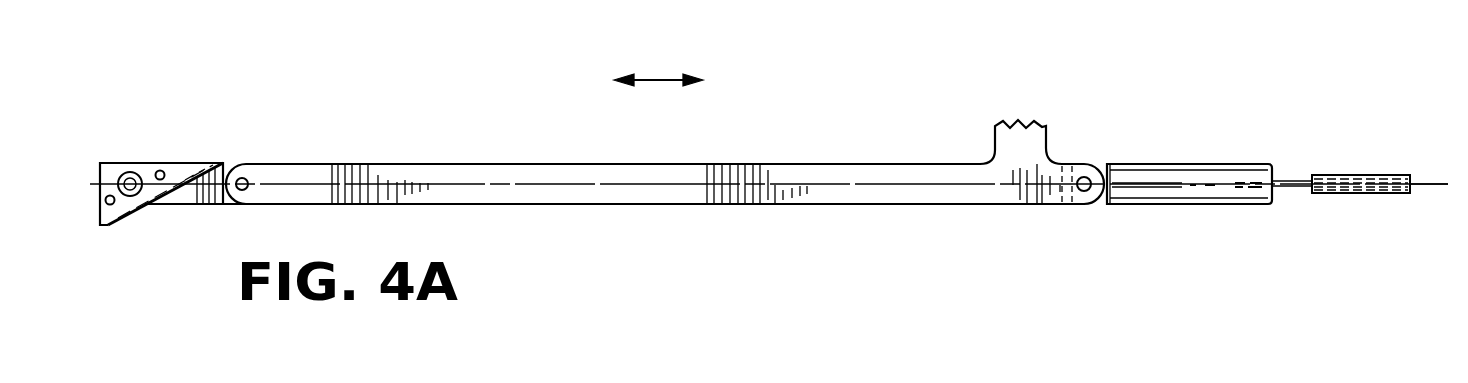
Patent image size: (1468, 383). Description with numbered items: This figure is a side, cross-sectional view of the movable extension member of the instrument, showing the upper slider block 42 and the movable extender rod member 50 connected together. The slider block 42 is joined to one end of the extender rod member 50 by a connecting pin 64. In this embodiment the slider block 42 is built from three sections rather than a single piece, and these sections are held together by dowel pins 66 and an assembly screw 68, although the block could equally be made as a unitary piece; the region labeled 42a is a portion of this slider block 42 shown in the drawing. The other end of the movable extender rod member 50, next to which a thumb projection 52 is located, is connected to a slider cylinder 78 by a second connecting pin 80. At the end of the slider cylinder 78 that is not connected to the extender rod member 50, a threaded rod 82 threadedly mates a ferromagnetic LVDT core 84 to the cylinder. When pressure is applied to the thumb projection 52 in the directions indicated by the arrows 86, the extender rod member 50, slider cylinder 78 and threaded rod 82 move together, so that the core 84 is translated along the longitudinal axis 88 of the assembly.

The upper slider block 42 is at (98, 177).
The bracket plate portion 42a is at (162, 162).
The movable extender rod member 50 is at (515, 172).
The thumb projection 52 is at (1025, 122).
The connecting pin 64 is at (247, 180).
The dowel pins 66 is at (165, 174).
The assembly screw 68 is at (132, 172).
The slider cylinder 78 is at (1192, 162).
The connecting pin 80 is at (1088, 176).
The threaded rod 82 is at (1293, 178).
The ferromagnetic LVDT core 84 is at (1368, 173).
The arrows 86 is at (660, 78).
The longitudinal axis 88 is at (1433, 183).